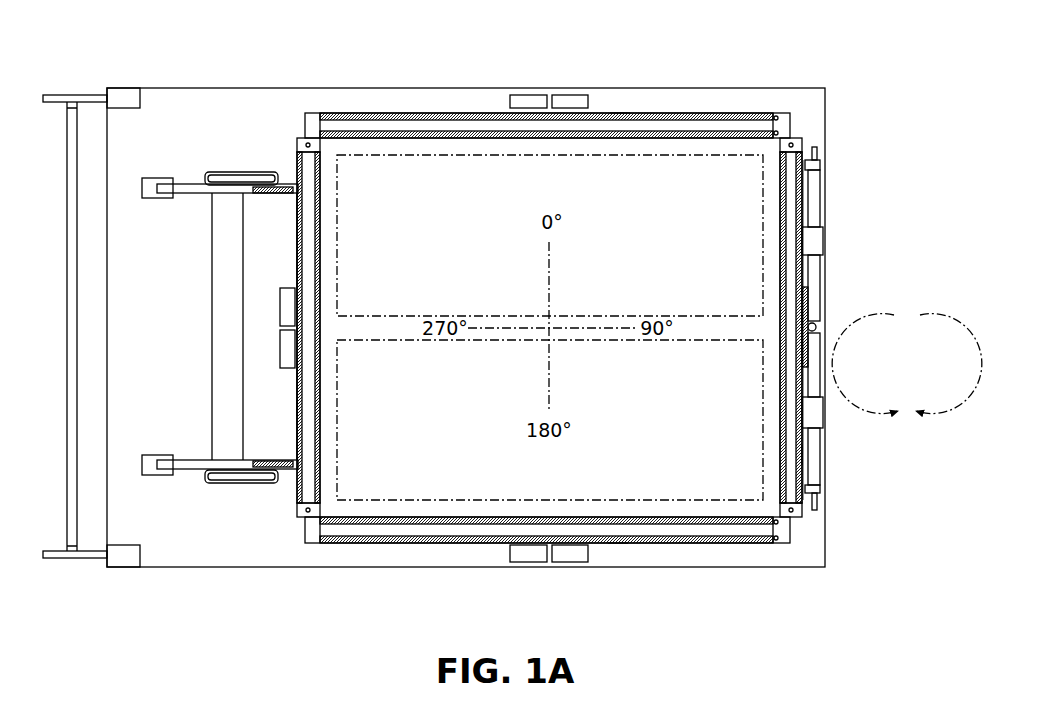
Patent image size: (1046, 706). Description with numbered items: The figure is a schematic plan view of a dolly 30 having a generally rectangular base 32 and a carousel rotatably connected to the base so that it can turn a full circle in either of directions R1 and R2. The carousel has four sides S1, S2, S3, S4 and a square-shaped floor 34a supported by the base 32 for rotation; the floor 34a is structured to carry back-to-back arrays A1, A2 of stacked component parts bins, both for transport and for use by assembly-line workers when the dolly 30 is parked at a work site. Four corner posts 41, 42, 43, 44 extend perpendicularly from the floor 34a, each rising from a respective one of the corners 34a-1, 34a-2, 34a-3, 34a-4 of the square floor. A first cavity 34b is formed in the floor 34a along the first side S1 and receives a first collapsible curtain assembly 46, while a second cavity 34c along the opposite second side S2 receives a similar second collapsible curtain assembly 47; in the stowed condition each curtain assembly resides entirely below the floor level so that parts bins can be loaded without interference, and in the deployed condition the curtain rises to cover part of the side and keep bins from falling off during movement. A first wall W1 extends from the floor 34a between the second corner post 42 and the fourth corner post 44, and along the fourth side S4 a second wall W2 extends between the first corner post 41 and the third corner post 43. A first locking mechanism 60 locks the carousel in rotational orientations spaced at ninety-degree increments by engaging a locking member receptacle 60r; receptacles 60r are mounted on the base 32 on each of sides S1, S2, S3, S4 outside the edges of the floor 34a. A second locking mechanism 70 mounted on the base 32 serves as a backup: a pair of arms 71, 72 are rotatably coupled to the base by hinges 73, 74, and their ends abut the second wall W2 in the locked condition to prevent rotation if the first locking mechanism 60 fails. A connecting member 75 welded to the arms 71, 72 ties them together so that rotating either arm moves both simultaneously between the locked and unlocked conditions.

The dolly 30 is at (723, 547).
The base 32 is at (101, 519).
The floor 34a is at (583, 326).
The corner 34a-1 is at (305, 515).
The corner 34a-2 is at (793, 517).
The corner 34a-3 is at (300, 140).
The corner 34a-4 is at (793, 140).
The first cavity 34b is at (547, 581).
The second cavity 34c is at (547, 84).
The corner post 41 is at (288, 574).
The corner post 42 is at (826, 570).
The corner post 43 is at (293, 79).
The corner post 44 is at (820, 79).
The first collapsible curtain assembly 46 is at (378, 543).
The second collapsible curtain assembly 47 is at (413, 112).
The first locking mechanism 60 is at (815, 326).
The locking member receptacle 60r is at (532, 95).
The second locking mechanism 70 is at (210, 329).
The arm 71 is at (187, 183).
The arm 72 is at (190, 469).
The hinge 73 is at (163, 200).
The hinge 74 is at (167, 457).
The connecting member 75 is at (227, 337).
The first wall W1 is at (802, 197).
The second wall W2 is at (297, 237).
The first side S1 is at (618, 543).
The second side S2 is at (620, 112).
The third side S3 is at (802, 455).
The fourth side S4 is at (297, 408).
The array of stacked component parts bins A1 is at (655, 452).
The array of stacked component parts bins A2 is at (683, 190).
The direction R1 is at (853, 380).
The direction R2 is at (947, 383).